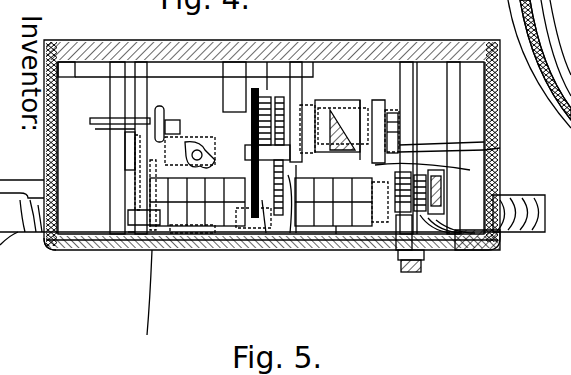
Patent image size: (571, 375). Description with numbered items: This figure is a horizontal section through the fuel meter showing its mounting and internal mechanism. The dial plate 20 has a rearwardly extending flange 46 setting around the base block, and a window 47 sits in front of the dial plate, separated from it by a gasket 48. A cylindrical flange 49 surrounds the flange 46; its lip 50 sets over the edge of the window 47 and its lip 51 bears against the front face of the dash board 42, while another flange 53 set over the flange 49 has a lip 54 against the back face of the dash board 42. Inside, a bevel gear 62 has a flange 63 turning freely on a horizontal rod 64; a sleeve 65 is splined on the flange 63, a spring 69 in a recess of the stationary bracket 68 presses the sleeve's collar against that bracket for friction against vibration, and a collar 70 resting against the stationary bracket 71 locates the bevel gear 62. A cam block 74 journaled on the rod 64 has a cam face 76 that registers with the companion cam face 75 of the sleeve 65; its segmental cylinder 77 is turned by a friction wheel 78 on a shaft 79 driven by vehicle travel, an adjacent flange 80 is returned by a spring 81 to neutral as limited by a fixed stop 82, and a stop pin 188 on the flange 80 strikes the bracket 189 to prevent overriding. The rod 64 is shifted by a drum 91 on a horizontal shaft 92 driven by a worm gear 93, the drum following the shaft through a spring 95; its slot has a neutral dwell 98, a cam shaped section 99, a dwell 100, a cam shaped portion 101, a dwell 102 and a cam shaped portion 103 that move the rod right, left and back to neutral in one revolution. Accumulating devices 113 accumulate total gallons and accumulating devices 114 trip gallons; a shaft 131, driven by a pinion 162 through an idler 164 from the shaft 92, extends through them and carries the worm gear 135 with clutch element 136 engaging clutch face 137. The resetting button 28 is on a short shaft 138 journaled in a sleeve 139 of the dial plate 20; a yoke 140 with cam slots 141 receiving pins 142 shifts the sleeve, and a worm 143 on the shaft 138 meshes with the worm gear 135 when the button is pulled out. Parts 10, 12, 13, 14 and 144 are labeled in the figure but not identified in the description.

The base block 10 is at (267, 152).
The lever 12 is at (366, 93).
The slide 13 is at (398, 93).
The arm 14 is at (312, 85).
The dial plate 20 is at (88, 262).
The button 28 is at (400, 275).
The dash board 42 is at (5, 248).
The rearwardly extending flange 46 is at (44, 178).
The window 47 is at (72, 252).
The gasket 48 is at (44, 255).
The cylindrical flange 49 is at (46, 142).
The lip 50 is at (28, 234).
The lip 51 is at (60, 252).
The flange 53 is at (46, 100).
The lip 54 is at (22, 193).
The bevel gear 62 is at (267, 95).
The flange 63 is at (210, 142).
The horizontal rod 64 is at (298, 262).
The sleeve 65 is at (209, 262).
The stationary bracket 68 is at (237, 70).
The spring 69 is at (240, 125).
The collar 70 is at (252, 262).
The stationary bracket 71 is at (296, 80).
The cam block 74 is at (185, 138).
The cam face 75 is at (178, 262).
The cam face 76 is at (152, 265).
The segmental cylinder 77 is at (143, 176).
The friction wheel 78 is at (160, 108).
The shaft 79 is at (175, 120).
The flange 80 is at (150, 120).
The spring 81 is at (140, 192).
The fixed stop 82 is at (132, 252).
The drum 91 is at (395, 114).
The horizontal shaft 92 is at (398, 133).
The worm gear 93 is at (260, 100).
The spring 95 is at (398, 123).
The neutral dwell 98 is at (362, 112).
The cam shaped section 99 is at (500, 151).
The dwell 100 is at (374, 262).
The cam shaped portion 101 is at (468, 72).
The dwell 102 is at (333, 112).
The cam shaped portion 103 is at (352, 112).
The accumulating devices 113 is at (526, 152).
The accumulating devices 114 is at (333, 262).
The shaft 131 is at (290, 262).
The worm gear 135 is at (440, 262).
The clutch element 136 is at (460, 262).
The clutch face 137 is at (474, 262).
The short shaft 138 is at (411, 275).
The sleeve 139 is at (400, 258).
The yoke 140 is at (430, 172).
The cam slots 141 is at (428, 180).
The pins 142 is at (446, 190).
The worm 143 is at (430, 172).
The lug 144 is at (492, 248).
The pinion 162 is at (278, 262).
The idler 164 is at (268, 240).
The stop pin 188 is at (105, 130).
The bracket 189 is at (122, 145).